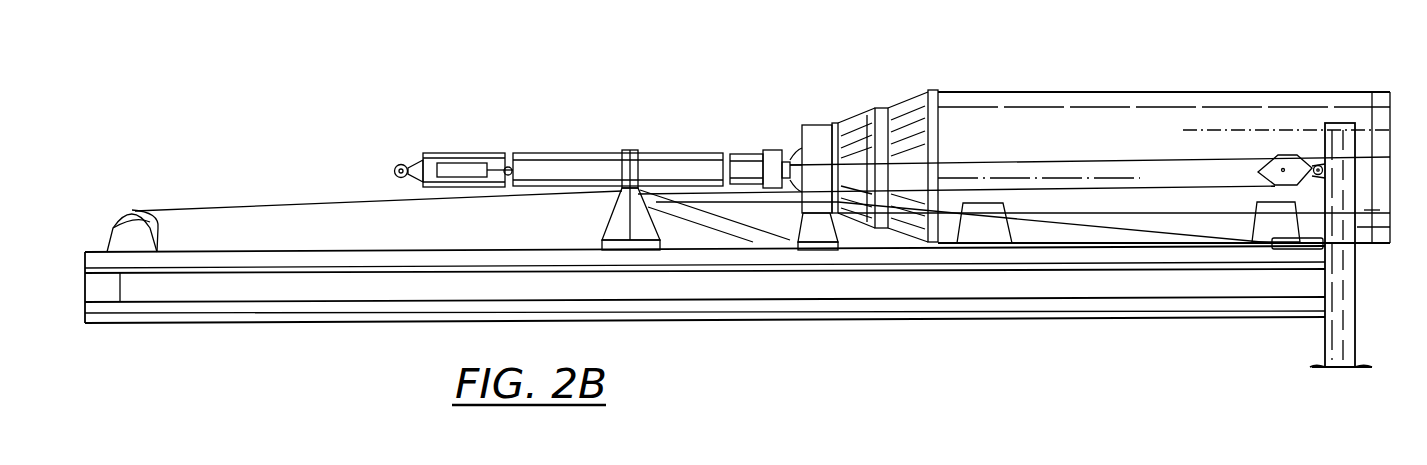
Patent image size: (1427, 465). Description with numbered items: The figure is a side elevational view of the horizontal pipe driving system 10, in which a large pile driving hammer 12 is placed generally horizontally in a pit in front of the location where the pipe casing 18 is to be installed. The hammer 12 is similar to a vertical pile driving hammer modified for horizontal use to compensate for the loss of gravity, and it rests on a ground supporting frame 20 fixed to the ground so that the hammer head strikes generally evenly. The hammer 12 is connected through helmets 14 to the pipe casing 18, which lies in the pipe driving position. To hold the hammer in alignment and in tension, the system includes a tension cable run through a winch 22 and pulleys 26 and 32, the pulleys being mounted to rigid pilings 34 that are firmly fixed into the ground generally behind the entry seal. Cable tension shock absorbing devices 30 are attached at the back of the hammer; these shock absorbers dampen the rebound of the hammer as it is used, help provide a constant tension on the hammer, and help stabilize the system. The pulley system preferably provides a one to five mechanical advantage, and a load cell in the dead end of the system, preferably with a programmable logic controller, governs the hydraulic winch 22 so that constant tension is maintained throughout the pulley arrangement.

The launch apparatus 10 is at (720, 98).
The pile driving hammer 12 is at (548, 152).
The helmets 14 is at (884, 99).
The pipe casing 18 is at (1121, 146).
The frame 20 is at (865, 290).
The winch 22 is at (123, 210).
The pulley 26 is at (1287, 153).
The cable tension shock absorbing devices 30 is at (458, 165).
The pulley 32 is at (1305, 250).
The rigid pilings 34 is at (1335, 137).